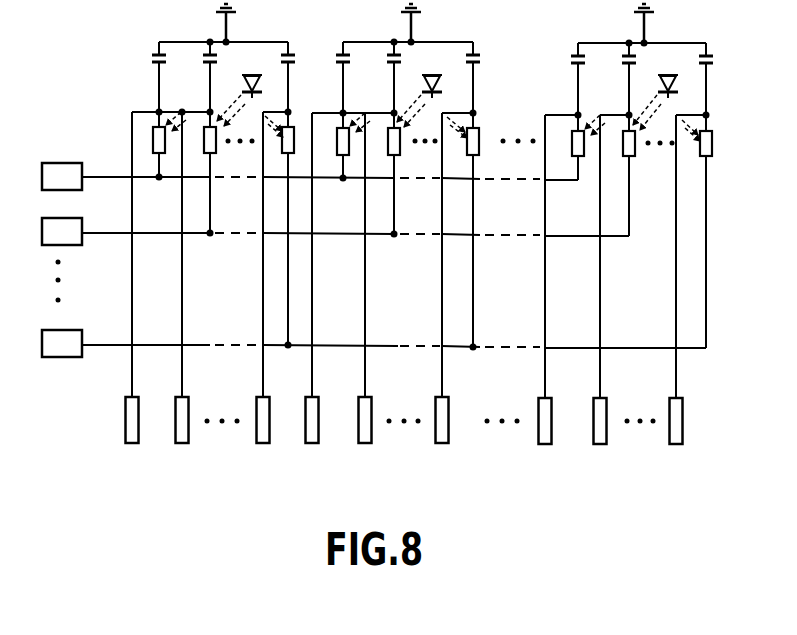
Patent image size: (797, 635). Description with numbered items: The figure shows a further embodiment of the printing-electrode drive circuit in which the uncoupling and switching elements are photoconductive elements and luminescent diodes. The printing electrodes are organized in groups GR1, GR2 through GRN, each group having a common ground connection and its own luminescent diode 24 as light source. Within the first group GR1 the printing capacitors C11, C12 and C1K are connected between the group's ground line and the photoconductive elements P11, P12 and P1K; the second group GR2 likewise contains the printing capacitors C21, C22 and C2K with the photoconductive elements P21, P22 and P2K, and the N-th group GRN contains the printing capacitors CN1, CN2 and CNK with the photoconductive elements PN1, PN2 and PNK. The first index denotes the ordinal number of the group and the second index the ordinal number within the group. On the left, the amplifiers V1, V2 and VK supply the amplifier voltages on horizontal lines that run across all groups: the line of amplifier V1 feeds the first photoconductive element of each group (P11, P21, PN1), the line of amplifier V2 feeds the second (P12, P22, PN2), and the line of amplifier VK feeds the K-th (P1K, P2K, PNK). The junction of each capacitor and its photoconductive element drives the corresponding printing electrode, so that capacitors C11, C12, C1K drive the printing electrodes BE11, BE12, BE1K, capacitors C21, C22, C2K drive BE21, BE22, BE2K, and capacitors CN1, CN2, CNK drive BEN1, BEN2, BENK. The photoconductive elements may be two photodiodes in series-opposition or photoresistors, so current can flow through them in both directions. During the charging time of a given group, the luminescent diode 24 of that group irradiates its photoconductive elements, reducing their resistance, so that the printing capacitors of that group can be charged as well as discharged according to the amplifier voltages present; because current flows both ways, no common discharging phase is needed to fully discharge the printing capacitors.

The luminescent diode 24 is at (264, 86).
The first printing electrode group GR1 is at (196, 23).
The second printing electrode group GR2 is at (384, 23).
The N-th printing electrode group GRN is at (623, 23).
The printing capacitor C11 is at (153, 63).
The printing capacitor C12 is at (205, 63).
The printing capacitor C1K is at (283, 63).
The printing capacitor C21 is at (338, 63).
The printing capacitor C22 is at (389, 63).
The printing capacitor C2K is at (468, 63).
The printing capacitor CN1 is at (572, 66).
The printing capacitor CN2 is at (624, 64).
The printing capacitor CNK is at (701, 64).
The photoconductive element P11 is at (160, 142).
The photoconductive element P12 is at (211, 144).
The photoconductive element P1K is at (286, 148).
The photoconductive element P21 is at (344, 144).
The photoconductive element P22 is at (393, 146).
The photoconductive element P2K is at (469, 150).
The photoconductive element PN1 is at (575, 148).
The photoconductive element PN2 is at (627, 148).
The photoconductive element PNK is at (704, 152).
The printing electrode BE11 is at (128, 434).
The printing electrode BE12 is at (179, 434).
The printing electrode BE1K is at (260, 434).
The printing electrode BE21 is at (309, 434).
The printing electrode BE22 is at (362, 434).
The printing electrode BE2K is at (439, 434).
The printing electrode BEN1 is at (542, 435).
The printing electrode BEN2 is at (597, 435).
The printing electrode BENK is at (673, 435).
The amplifier V1 is at (82, 163).
The amplifier V2 is at (82, 218).
The amplifier VK is at (56, 357).